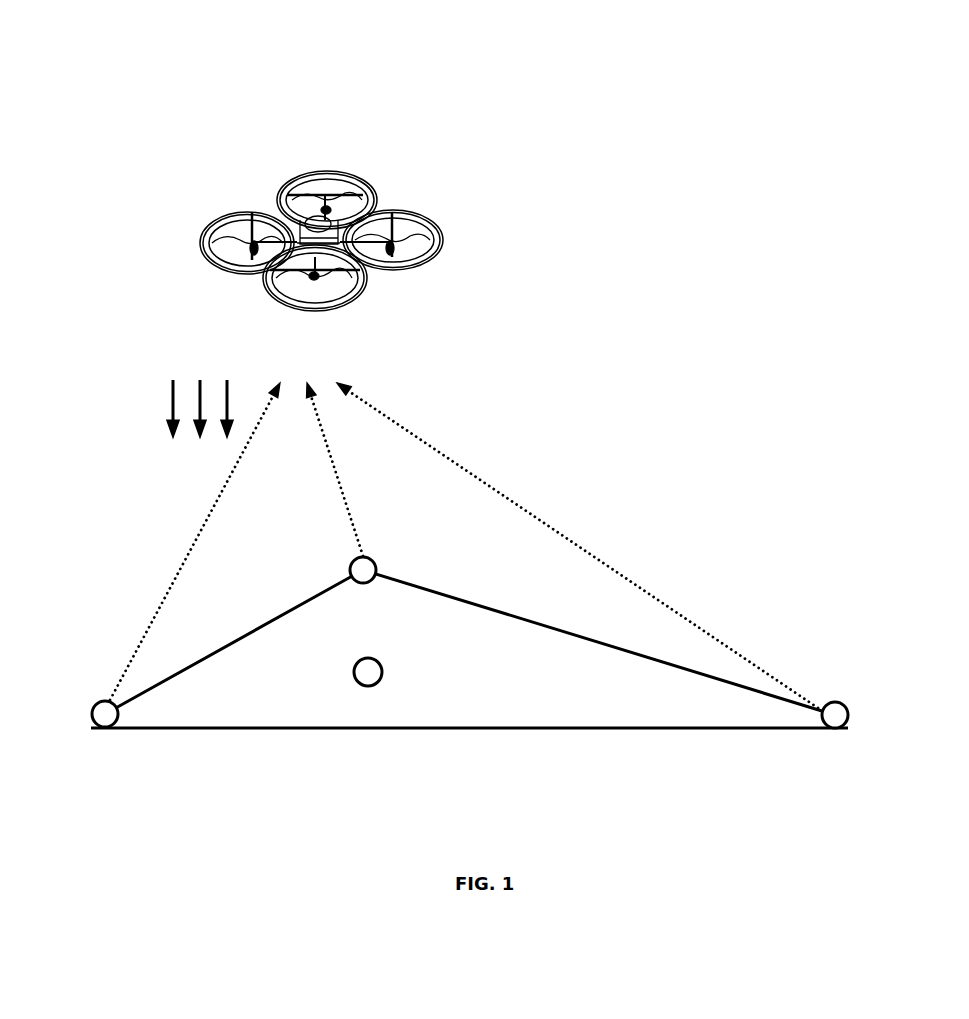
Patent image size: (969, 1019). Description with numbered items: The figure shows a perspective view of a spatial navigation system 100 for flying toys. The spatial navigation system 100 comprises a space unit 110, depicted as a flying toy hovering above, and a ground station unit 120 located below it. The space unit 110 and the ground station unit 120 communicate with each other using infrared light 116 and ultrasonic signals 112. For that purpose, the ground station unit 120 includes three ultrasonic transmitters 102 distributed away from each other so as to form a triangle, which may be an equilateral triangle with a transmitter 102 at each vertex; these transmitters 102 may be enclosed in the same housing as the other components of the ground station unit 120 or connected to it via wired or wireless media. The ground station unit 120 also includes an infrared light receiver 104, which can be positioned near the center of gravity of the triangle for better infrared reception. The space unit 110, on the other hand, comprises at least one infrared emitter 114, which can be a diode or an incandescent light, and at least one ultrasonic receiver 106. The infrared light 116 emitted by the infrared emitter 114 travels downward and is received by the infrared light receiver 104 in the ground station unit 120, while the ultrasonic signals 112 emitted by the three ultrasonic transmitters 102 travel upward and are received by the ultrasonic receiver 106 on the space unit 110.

The spatial navigation system 100 is at (413, 42).
The ultrasonic transmitters 102 is at (368, 553).
The infrared light receiver 104 is at (355, 666).
The ultrasonic receiver 106 is at (362, 282).
The space unit 110 is at (392, 205).
The ultrasonic signals 112 is at (572, 540).
The infrared emitter 114 is at (258, 268).
The infrared light 116 is at (147, 413).
The ground station unit 120 is at (453, 730).